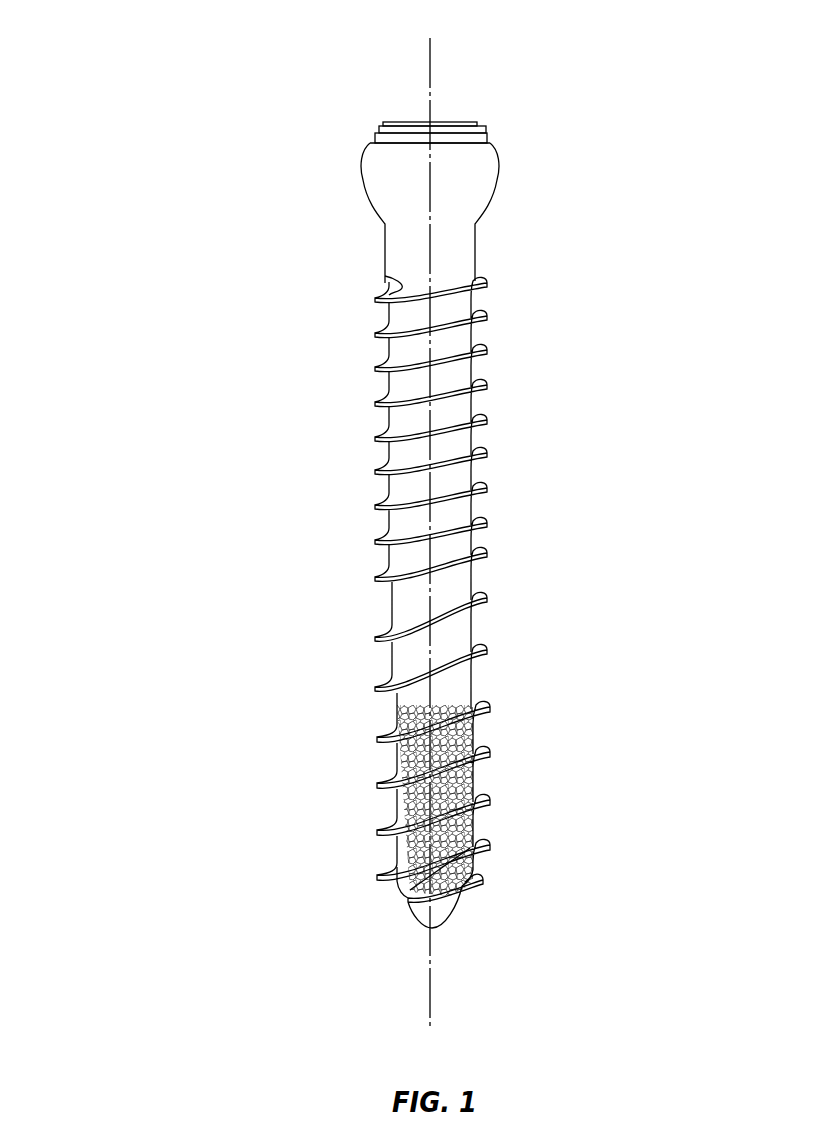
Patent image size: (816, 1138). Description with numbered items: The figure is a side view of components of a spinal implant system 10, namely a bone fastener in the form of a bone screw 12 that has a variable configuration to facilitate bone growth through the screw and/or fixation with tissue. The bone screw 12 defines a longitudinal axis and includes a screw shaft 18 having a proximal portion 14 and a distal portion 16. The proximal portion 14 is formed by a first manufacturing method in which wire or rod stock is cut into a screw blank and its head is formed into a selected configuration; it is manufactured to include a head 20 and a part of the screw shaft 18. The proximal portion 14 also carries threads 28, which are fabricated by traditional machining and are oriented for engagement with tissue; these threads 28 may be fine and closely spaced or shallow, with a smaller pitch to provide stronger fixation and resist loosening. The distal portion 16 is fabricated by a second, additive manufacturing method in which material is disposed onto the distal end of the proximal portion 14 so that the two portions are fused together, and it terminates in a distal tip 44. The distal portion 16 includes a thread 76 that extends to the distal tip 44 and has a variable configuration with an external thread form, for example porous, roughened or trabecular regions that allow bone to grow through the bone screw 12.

The spinal implant system 10 is at (68, 198).
The bone screw 12 is at (150, 424).
The proximal portion 14 is at (603, 352).
The distal portion 16 is at (547, 832).
The screw shaft 18 is at (281, 624).
The head 20 is at (562, 133).
The threads 28 is at (485, 466).
The distal tip 44 is at (443, 905).
The thread 76 is at (486, 657).